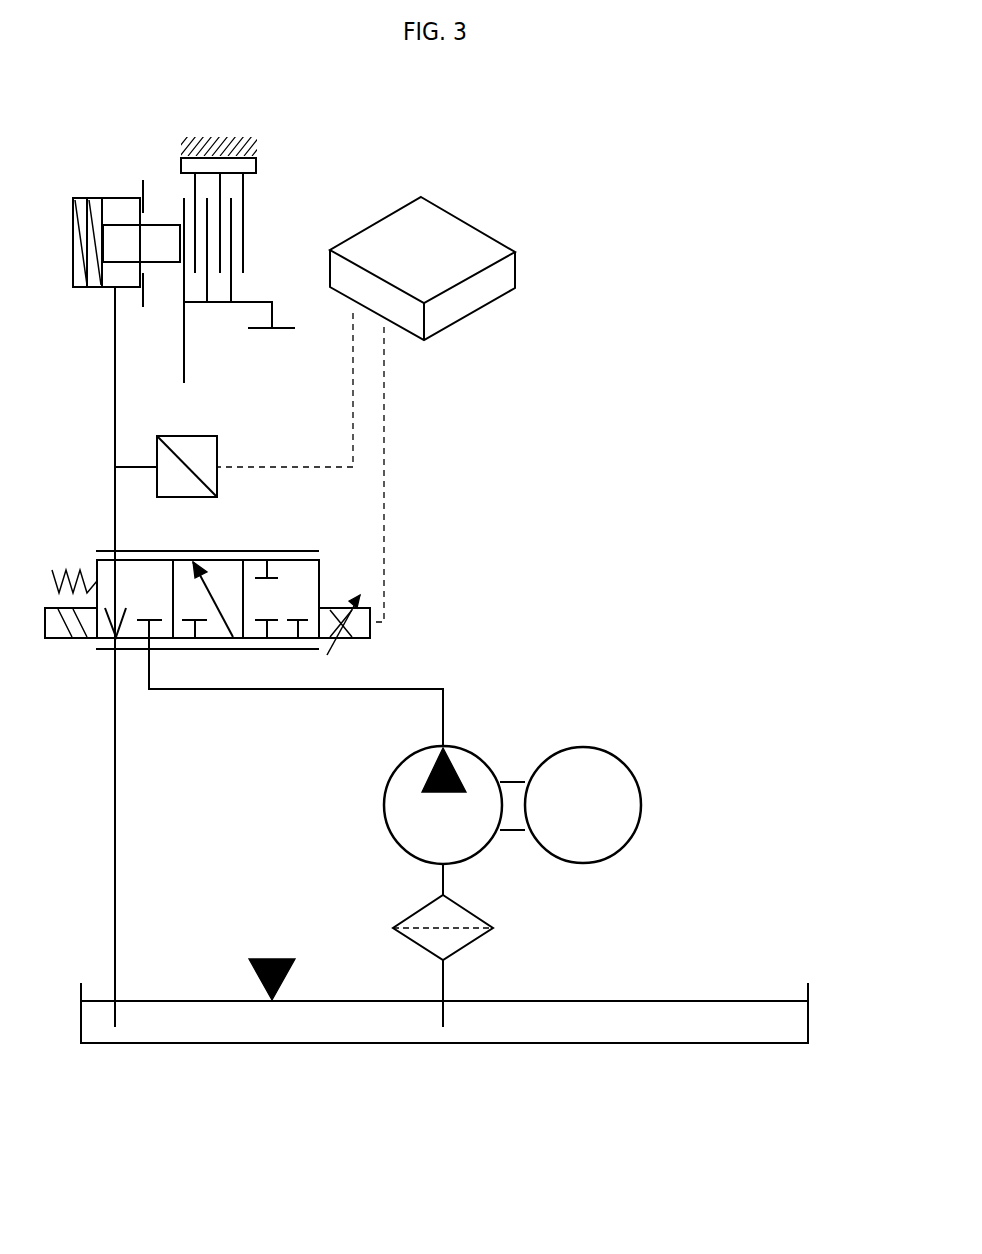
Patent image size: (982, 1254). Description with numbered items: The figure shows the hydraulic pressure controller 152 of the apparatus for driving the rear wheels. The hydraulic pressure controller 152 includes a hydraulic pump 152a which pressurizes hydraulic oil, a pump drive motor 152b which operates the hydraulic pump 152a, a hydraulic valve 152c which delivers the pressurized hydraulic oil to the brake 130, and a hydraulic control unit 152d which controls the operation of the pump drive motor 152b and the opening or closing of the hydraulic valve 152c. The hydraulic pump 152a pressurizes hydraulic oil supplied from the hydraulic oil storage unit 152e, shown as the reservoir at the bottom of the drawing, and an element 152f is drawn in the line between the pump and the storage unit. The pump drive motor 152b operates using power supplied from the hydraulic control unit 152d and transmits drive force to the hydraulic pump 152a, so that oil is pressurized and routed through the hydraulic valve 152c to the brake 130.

The brake 130 is at (253, 195).
The hydraulic pressure controller 152 is at (653, 288).
The hydraulic pump 152a is at (475, 755).
The pump drive motor 152b is at (613, 755).
The hydraulic valve 152c is at (313, 583).
The hydraulic control unit 152d is at (435, 240).
The hydraulic oil storage unit 152e is at (192, 1043).
The filter 152f is at (472, 948).